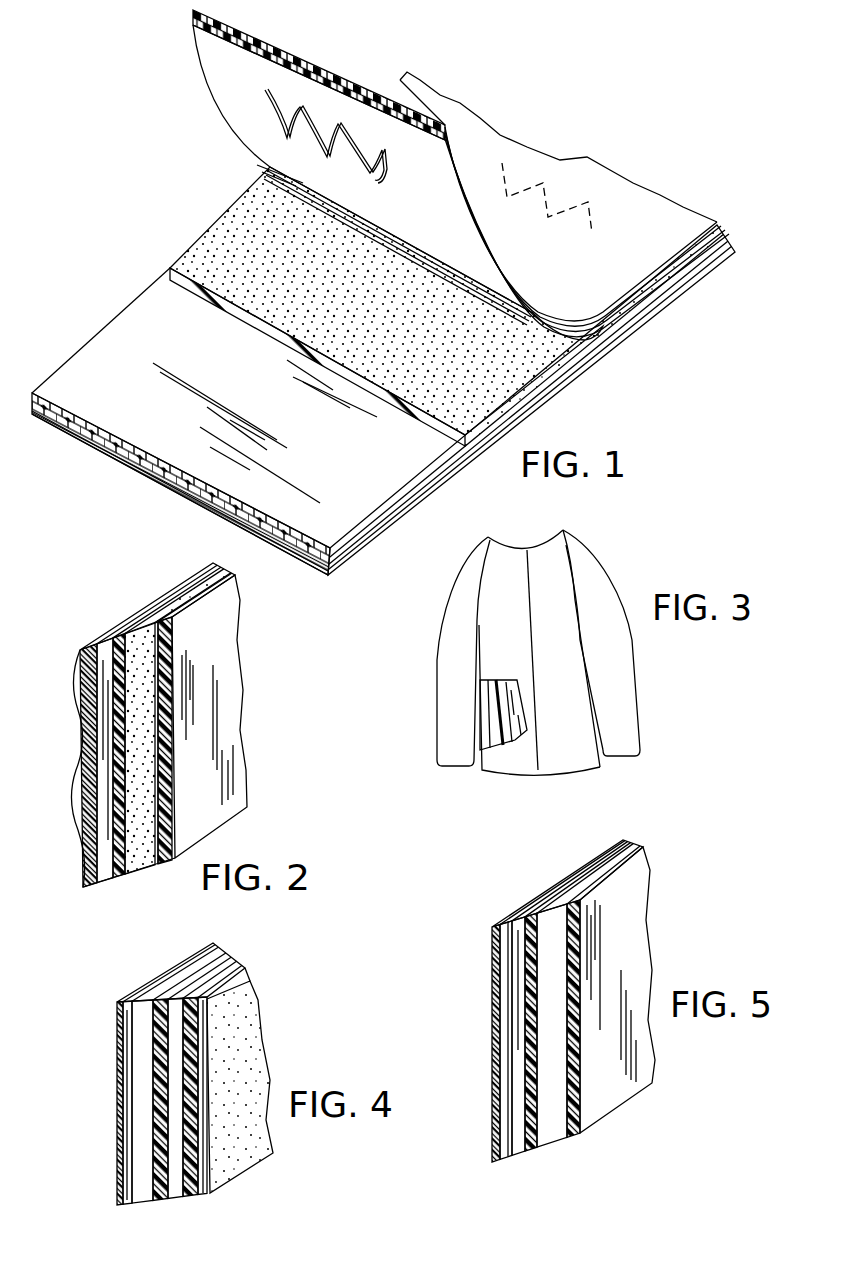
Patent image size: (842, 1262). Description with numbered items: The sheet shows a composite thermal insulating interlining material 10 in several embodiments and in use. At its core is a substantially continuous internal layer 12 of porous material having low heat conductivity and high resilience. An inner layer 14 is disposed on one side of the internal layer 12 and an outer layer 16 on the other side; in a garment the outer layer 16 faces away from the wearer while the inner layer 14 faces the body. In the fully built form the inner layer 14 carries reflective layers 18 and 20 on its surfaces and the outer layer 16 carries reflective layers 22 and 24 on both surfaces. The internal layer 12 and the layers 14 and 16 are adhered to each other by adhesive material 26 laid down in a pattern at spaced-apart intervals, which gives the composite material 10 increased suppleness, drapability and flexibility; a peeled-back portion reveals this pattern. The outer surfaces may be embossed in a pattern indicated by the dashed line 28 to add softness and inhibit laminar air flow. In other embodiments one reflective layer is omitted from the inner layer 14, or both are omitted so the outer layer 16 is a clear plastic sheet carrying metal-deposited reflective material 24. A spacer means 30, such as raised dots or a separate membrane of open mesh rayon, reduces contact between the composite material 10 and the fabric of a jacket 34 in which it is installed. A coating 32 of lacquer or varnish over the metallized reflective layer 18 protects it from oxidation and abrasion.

In FIG. 1, the composite thermal insulating interlining material 10 is at (176, 162).
In FIG. 2, the composite thermal insulating interlining material 10 is at (179, 546).
In FIG. 5, the composite thermal insulating interlining material 10 is at (585, 842).
In FIG. 1, the internal layer 12 is at (228, 325).
In FIG. 2, the internal layer 12 is at (115, 640).
In FIG. 4, the internal layer 12 is at (150, 1005).
In FIG. 5, the internal layer 12 is at (525, 920).
In FIG. 1, the inner layer 14 is at (195, 17).
In FIG. 2, the inner layer 14 is at (167, 647).
In FIG. 4, the inner layer 14 is at (195, 1022).
In FIG. 5, the inner layer 14 is at (567, 925).
In FIG. 1, the outer layer 16 is at (78, 443).
In FIG. 2, the outer layer 16 is at (92, 733).
In FIG. 4, the outer layer 16 is at (117, 1018).
In FIG. 5, the outer layer 16 is at (495, 1008).
In FIG. 1, the reflective layer 18 is at (228, 32).
In FIG. 4, the reflective layer 18 is at (240, 983).
In FIG. 1, the reflective layer 20 is at (195, 25).
In FIG. 2, the reflective layer 20 is at (150, 623).
In FIG. 4, the reflective layer 20 is at (190, 970).
In FIG. 1, the reflective layer 22 is at (107, 460).
In FIG. 2, the reflective layer 22 is at (82, 660).
In FIG. 3, the reflective layer 22 is at (515, 700).
In FIG. 4, the reflective layer 22 is at (117, 1053).
In FIG. 1, the reflective layer 24 is at (97, 428).
In FIG. 4, the reflective layer 24 is at (130, 1087).
In FIG. 5, the reflective layer 24 is at (497, 942).
In FIG. 1, the adhesive material 26 is at (381, 182).
In FIG. 1, the embossed pattern 28 is at (503, 173).
In FIG. 2, the spacer means 30 is at (72, 700).
In FIG. 3, the spacer means 30 is at (490, 705).
In FIG. 4, the coating 32 is at (250, 1048).
In FIG. 3, the jacket 34 is at (483, 593).